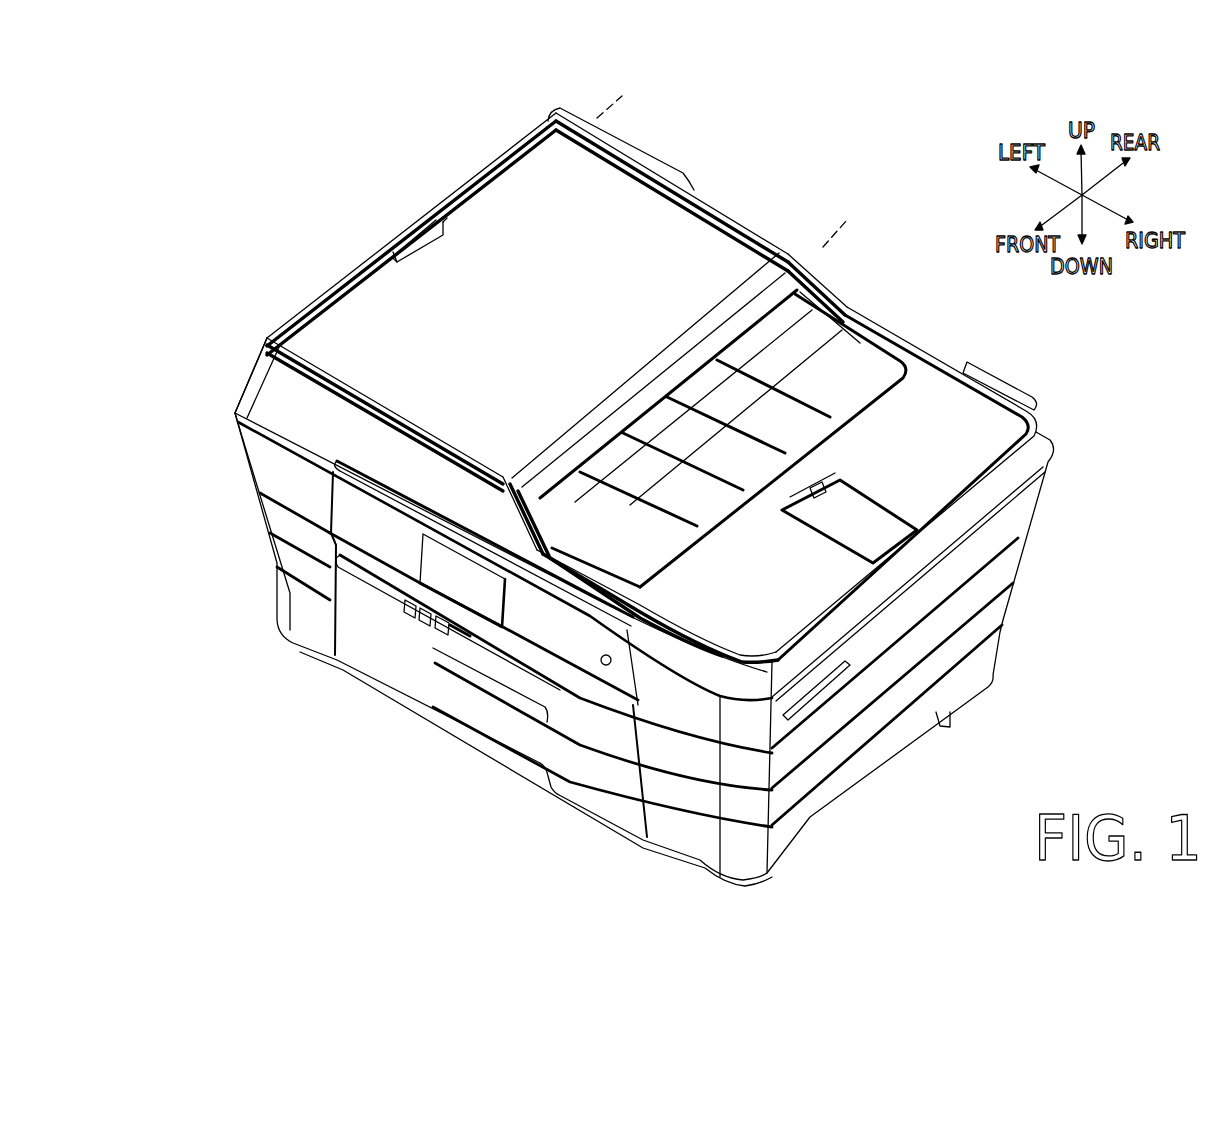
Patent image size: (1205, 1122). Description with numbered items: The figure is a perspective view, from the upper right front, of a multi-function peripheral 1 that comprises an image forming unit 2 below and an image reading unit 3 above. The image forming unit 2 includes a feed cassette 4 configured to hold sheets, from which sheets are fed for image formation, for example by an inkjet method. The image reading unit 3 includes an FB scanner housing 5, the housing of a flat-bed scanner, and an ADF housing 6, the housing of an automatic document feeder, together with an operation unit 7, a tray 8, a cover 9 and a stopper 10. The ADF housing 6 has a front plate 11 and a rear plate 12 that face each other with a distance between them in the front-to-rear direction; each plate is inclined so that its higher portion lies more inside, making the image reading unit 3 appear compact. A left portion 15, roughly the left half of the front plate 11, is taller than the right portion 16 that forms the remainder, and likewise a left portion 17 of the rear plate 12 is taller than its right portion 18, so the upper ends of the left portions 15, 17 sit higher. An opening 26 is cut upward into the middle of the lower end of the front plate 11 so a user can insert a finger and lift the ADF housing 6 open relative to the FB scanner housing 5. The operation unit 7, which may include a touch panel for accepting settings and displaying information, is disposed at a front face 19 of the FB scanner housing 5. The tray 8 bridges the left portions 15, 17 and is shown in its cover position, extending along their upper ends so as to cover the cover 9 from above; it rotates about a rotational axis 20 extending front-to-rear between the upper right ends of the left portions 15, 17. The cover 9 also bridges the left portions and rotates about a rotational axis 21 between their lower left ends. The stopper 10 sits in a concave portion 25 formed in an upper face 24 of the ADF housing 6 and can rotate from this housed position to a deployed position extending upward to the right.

The multi-function peripheral 1 is at (651, 491).
The image forming unit 2 is at (662, 649).
The image reading unit 3 is at (662, 476).
The feed cassette 4 is at (593, 737).
The FB scanner housing 5 is at (234, 457).
The ADF housing 6 is at (508, 327).
The operation unit 7 is at (423, 614).
The tray 8 is at (700, 247).
The cover 9 is at (420, 235).
The stopper 10 is at (850, 503).
The front plate 11 is at (285, 400).
The rear plate 12 is at (718, 208).
The left portion 15 is at (373, 430).
The right portion 16 is at (637, 613).
The left portion 17 is at (780, 237).
The right portion 18 is at (880, 322).
The front face 19 is at (317, 503).
The rotational axis 20 is at (477, 517).
The rotational axis 21 is at (233, 412).
The upper face 24 is at (930, 397).
The concave portion 25 is at (807, 499).
The opening 26 is at (340, 490).